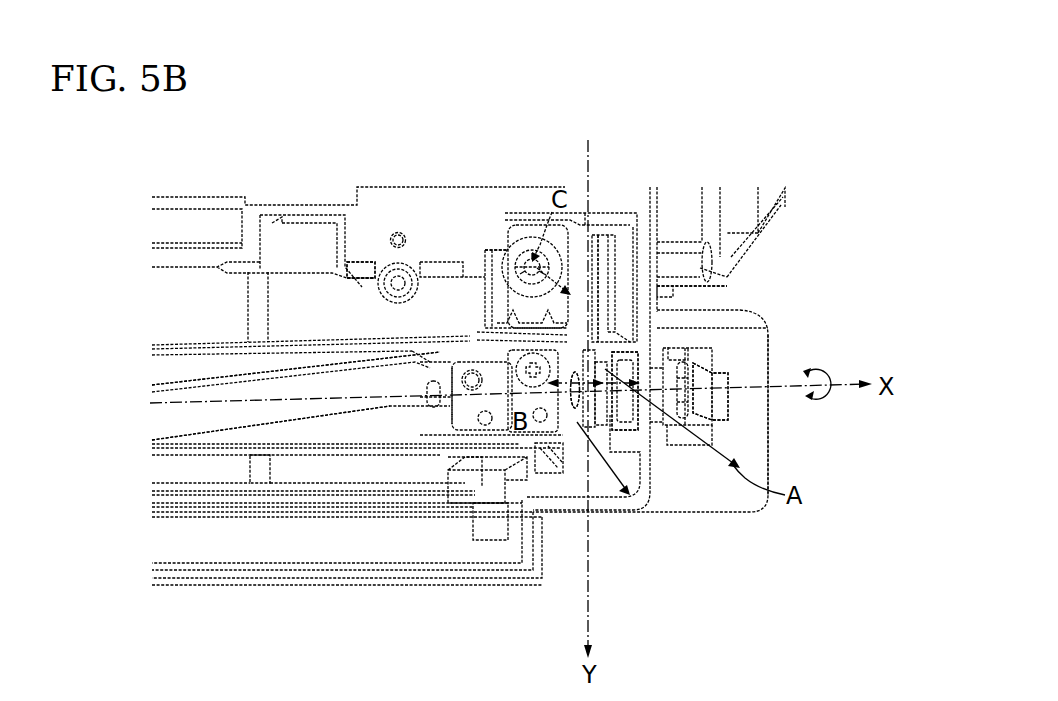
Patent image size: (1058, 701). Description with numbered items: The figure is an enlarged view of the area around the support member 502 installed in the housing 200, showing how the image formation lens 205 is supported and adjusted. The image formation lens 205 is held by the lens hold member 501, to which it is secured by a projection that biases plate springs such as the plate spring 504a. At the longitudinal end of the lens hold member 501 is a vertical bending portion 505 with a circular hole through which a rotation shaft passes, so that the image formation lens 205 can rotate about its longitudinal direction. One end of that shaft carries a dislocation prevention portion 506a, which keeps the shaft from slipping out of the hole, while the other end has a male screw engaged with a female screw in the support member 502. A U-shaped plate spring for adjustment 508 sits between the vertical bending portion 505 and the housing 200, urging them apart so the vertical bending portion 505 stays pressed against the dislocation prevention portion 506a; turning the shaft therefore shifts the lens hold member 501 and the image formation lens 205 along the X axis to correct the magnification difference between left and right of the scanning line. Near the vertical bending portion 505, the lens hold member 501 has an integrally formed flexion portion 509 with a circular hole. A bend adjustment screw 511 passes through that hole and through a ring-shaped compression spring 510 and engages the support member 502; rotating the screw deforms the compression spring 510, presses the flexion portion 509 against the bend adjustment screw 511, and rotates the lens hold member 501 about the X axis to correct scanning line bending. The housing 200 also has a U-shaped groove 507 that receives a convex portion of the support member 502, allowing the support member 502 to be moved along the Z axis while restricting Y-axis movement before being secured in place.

The lens hold member 501 is at (207, 363).
The flexion portion 509 is at (482, 307).
The compression spring 510 is at (487, 252).
The bend adjustment screw 511 is at (518, 254).
The vertical bending portion 505 is at (578, 360).
The support member 502 is at (663, 388).
The housing 200 is at (760, 367).
The image formation lens 205 is at (308, 388).
The plate spring 504a is at (470, 398).
The dislocation prevention portion 506a is at (688, 392).
The U-shaped groove 507 is at (565, 435).
The plate spring for adjustment 508 is at (621, 418).